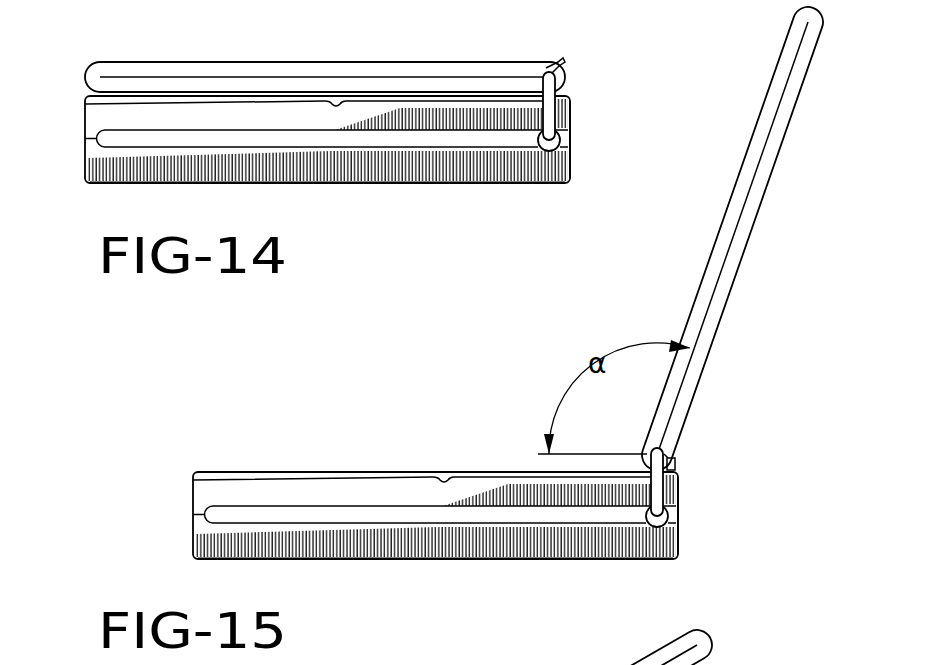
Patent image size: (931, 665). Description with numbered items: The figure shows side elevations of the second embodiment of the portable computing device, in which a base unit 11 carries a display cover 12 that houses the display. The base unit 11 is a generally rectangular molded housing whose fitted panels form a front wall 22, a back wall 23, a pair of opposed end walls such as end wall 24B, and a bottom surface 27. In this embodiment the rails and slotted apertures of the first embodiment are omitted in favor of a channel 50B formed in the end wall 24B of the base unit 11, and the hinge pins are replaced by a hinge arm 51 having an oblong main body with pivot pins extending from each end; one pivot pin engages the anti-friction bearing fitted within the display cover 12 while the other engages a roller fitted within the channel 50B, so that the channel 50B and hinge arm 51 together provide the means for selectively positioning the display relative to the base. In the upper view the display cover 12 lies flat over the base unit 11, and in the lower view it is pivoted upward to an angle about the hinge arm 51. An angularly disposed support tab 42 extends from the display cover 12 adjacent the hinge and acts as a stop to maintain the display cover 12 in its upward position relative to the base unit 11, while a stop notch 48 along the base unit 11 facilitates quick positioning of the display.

In FIG. 14, the base unit 11 is at (510, 160).
In FIG. 15, the base unit 11 is at (436, 570).
In FIG. 14, the display cover 12 is at (451, 72).
In FIG. 15, the display cover 12 is at (742, 233).
In FIG. 14, the front wall 22 is at (85, 155).
In FIG. 15, the front wall 22 is at (405, 515).
In FIG. 14, the back wall 23 is at (570, 165).
In FIG. 15, the back wall 23 is at (716, 522).
In FIG. 14, the end wall 24B is at (562, 117).
In FIG. 15, the end wall 24B is at (603, 499).
In FIG. 14, the bottom surface 27 is at (412, 183).
In FIG. 15, the bottom surface 27 is at (435, 585).
In FIG. 14, the support tab 42 is at (556, 62).
In FIG. 15, the support tab 42 is at (711, 450).
In FIG. 15, the stop notch 48 is at (422, 451).
In FIG. 14, the channel 50B is at (135, 140).
In FIG. 15, the channel 50B is at (383, 499).
In FIG. 15, the hinge arm 51 is at (722, 487).